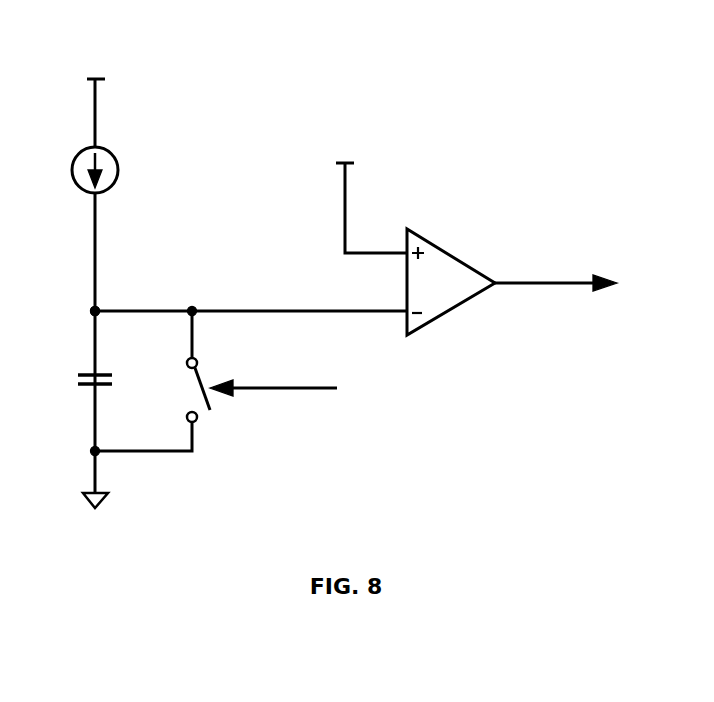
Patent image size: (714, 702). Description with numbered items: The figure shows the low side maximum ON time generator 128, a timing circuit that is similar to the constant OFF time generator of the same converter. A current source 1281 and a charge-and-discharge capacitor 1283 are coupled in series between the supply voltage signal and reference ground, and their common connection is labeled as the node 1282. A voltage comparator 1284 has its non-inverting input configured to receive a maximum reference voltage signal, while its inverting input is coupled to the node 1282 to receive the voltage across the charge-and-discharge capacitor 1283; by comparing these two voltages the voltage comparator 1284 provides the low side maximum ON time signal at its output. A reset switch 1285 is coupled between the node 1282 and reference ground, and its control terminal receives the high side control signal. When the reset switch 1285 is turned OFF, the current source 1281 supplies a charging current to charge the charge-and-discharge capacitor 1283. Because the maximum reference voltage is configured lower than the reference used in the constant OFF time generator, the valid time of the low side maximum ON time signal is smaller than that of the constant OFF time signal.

The low side maximum ON time generator 128 is at (262, 58).
The current source 1281 is at (130, 142).
The node 1282 is at (100, 308).
The charge-and-discharge capacitor 1283 is at (113, 392).
The voltage comparator 1284 is at (440, 247).
The reset switch 1285 is at (203, 383).